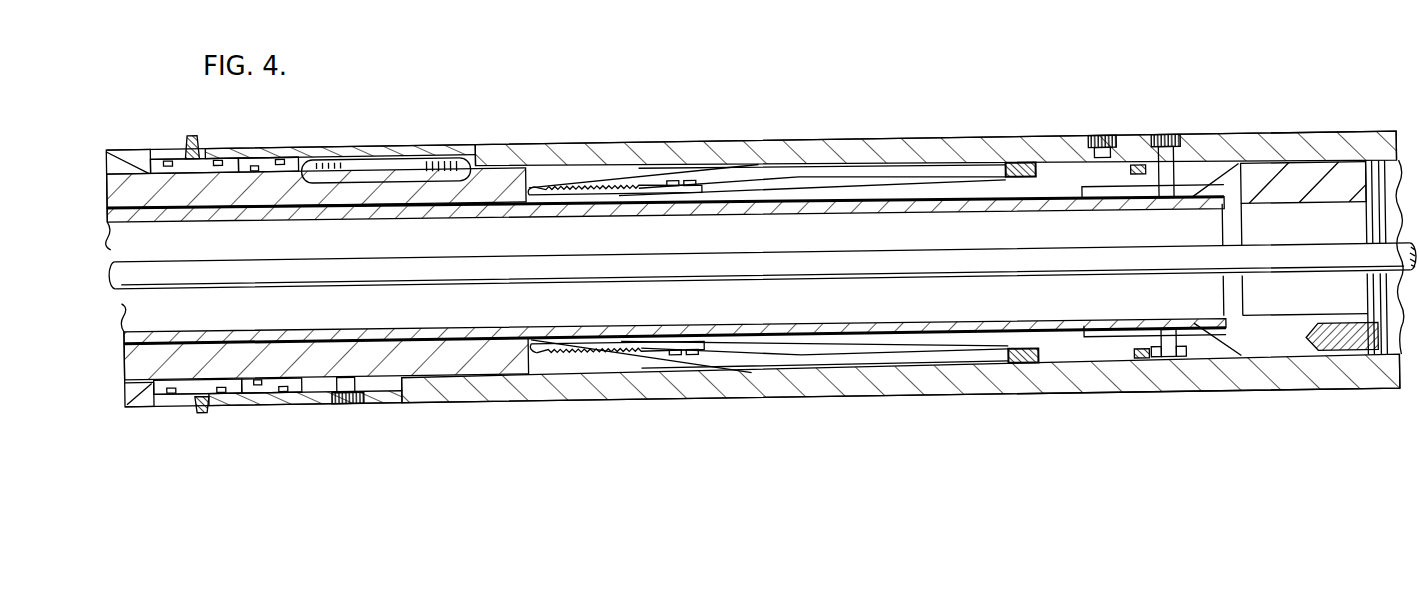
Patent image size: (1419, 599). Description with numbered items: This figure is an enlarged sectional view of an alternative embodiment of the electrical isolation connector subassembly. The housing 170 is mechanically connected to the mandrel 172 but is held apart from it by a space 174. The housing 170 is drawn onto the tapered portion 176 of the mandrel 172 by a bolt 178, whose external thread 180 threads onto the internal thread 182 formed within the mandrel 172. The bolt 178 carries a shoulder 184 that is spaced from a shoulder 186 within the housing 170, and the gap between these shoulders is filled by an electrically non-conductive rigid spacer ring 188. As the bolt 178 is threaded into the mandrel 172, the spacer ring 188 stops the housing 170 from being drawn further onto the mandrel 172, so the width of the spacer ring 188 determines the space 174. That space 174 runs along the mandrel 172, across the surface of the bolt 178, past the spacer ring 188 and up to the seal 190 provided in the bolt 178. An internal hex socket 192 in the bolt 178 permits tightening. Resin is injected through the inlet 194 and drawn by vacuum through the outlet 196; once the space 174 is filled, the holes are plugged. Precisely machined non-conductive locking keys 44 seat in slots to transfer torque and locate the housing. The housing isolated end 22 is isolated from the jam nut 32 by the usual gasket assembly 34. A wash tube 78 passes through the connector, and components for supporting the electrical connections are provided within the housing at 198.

The isolated end 22 is at (211, 148).
The jam nut 32 is at (160, 146).
The gasket assembly 34 is at (213, 387).
The locking keys 44 is at (393, 172).
The wash tube 78 is at (900, 328).
The housing 170 is at (862, 139).
The mandrel 172 is at (497, 185).
The space 174 is at (631, 161).
The tapered portion 176 is at (718, 175).
The bolt 178 is at (923, 187).
The external thread 180 is at (603, 353).
The internal thread 182 is at (568, 190).
The shoulder 184 is at (1043, 163).
The shoulder 186 is at (1004, 162).
The rigid spacer ring 188 is at (1021, 365).
The seal 190 is at (1144, 366).
The internal hex socket 192 is at (1113, 335).
The inlet 194 is at (342, 404).
The outlet 196 is at (1105, 133).
The components for supporting the electrical connections 198 is at (1303, 183).